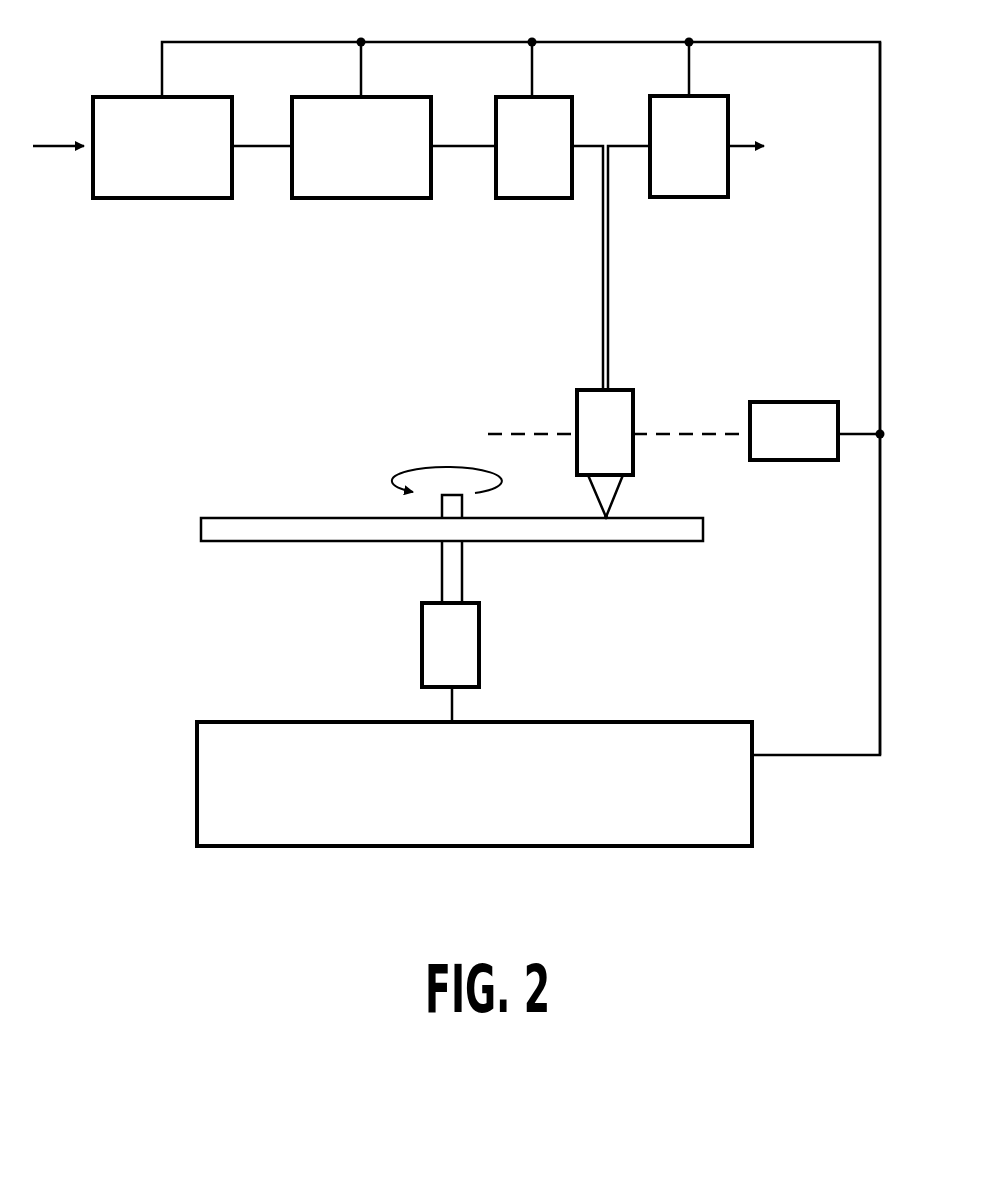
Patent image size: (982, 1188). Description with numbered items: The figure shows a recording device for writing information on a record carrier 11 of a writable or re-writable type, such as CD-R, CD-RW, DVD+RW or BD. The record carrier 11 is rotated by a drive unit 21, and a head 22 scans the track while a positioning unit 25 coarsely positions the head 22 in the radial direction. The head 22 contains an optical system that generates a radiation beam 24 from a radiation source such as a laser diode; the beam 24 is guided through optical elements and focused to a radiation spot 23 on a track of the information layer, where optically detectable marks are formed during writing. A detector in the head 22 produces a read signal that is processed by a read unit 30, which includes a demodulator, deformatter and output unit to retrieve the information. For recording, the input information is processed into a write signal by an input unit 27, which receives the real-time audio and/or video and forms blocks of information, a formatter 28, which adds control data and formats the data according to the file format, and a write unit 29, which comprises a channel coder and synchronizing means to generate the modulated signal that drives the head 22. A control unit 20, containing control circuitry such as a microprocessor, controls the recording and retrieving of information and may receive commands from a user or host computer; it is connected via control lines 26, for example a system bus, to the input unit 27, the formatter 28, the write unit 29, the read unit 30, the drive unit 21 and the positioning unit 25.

The record carrier 11 is at (668, 535).
The control unit 20 is at (708, 730).
The drive unit 21 is at (481, 632).
The head 22 is at (577, 410).
The radiation spot 23 is at (612, 512).
The radiation beam 24 is at (590, 487).
The positioning unit 25 is at (796, 410).
The control lines 26 is at (878, 156).
The input unit 27 is at (160, 185).
The formatter 28 is at (303, 185).
The write unit 29 is at (550, 187).
The read unit 30 is at (730, 104).